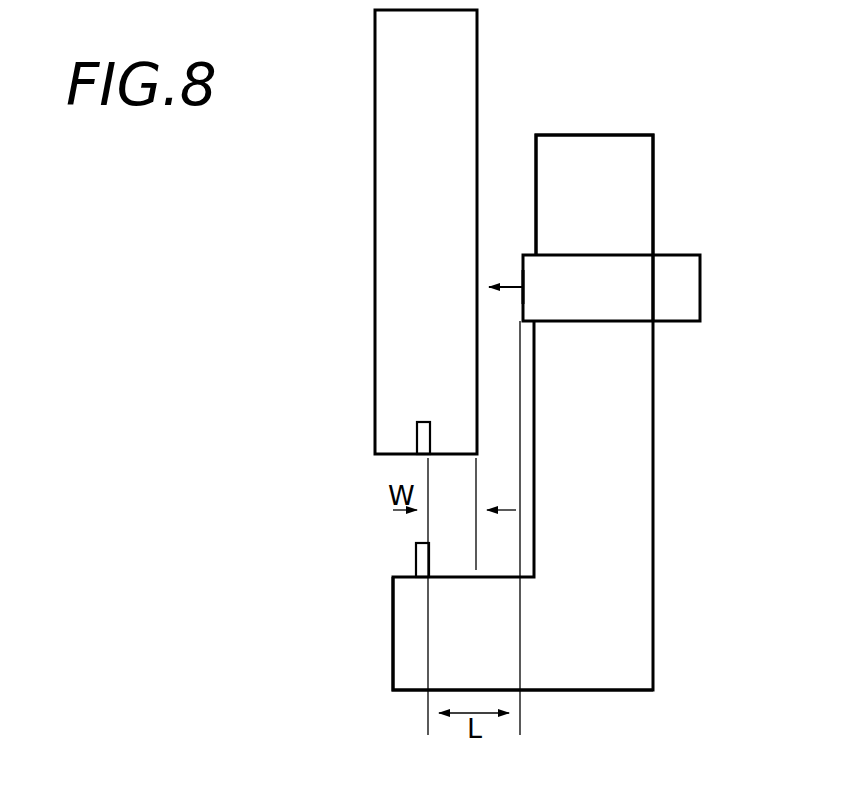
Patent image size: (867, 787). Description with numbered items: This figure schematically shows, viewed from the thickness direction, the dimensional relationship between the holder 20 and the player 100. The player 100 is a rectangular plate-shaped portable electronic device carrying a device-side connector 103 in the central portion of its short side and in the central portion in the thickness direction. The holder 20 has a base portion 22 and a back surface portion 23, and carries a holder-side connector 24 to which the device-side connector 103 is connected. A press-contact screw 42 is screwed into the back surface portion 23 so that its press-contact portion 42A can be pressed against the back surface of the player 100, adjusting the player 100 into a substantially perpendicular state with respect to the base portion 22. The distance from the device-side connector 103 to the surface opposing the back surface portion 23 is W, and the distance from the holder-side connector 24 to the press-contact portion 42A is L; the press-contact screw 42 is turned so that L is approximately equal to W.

The player 100 is at (388, 44).
The device-side connector 103 is at (420, 436).
The holder 20 is at (644, 104).
The back surface portion 23 is at (627, 191).
The base portion 22 is at (406, 646).
The press-contact screw 42 is at (675, 292).
The press-contact portion 42A is at (523, 272).
The holder-side connector 24 is at (420, 558).